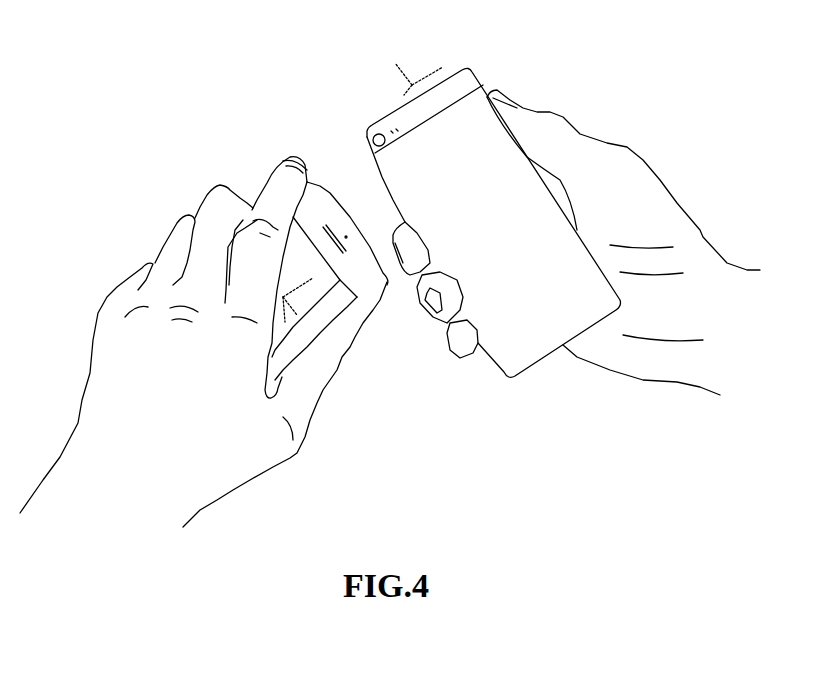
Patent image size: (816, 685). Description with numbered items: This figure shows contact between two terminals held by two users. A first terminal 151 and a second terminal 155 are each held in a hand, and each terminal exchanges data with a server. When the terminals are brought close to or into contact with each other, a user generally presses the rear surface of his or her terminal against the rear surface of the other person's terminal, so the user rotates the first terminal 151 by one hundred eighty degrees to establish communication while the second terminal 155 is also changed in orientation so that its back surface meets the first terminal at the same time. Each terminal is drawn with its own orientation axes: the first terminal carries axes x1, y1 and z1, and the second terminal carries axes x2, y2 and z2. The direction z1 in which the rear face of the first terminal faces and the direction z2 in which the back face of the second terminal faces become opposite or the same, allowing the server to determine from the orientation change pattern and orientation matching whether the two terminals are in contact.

The second terminal 155 is at (297, 207).
The first terminal 151 is at (529, 206).
The x axis of second mobile terminal x1 is at (289, 316).
The y axis of second mobile terminal y1 is at (304, 282).
The direction in which the rear face of the first terminal faces z1 is at (297, 304).
The x axis of first mobile terminal x2 is at (434, 71).
The y axis of first mobile terminal y2 is at (394, 67).
The direction in which the back face of the second terminal faces z2 is at (402, 95).